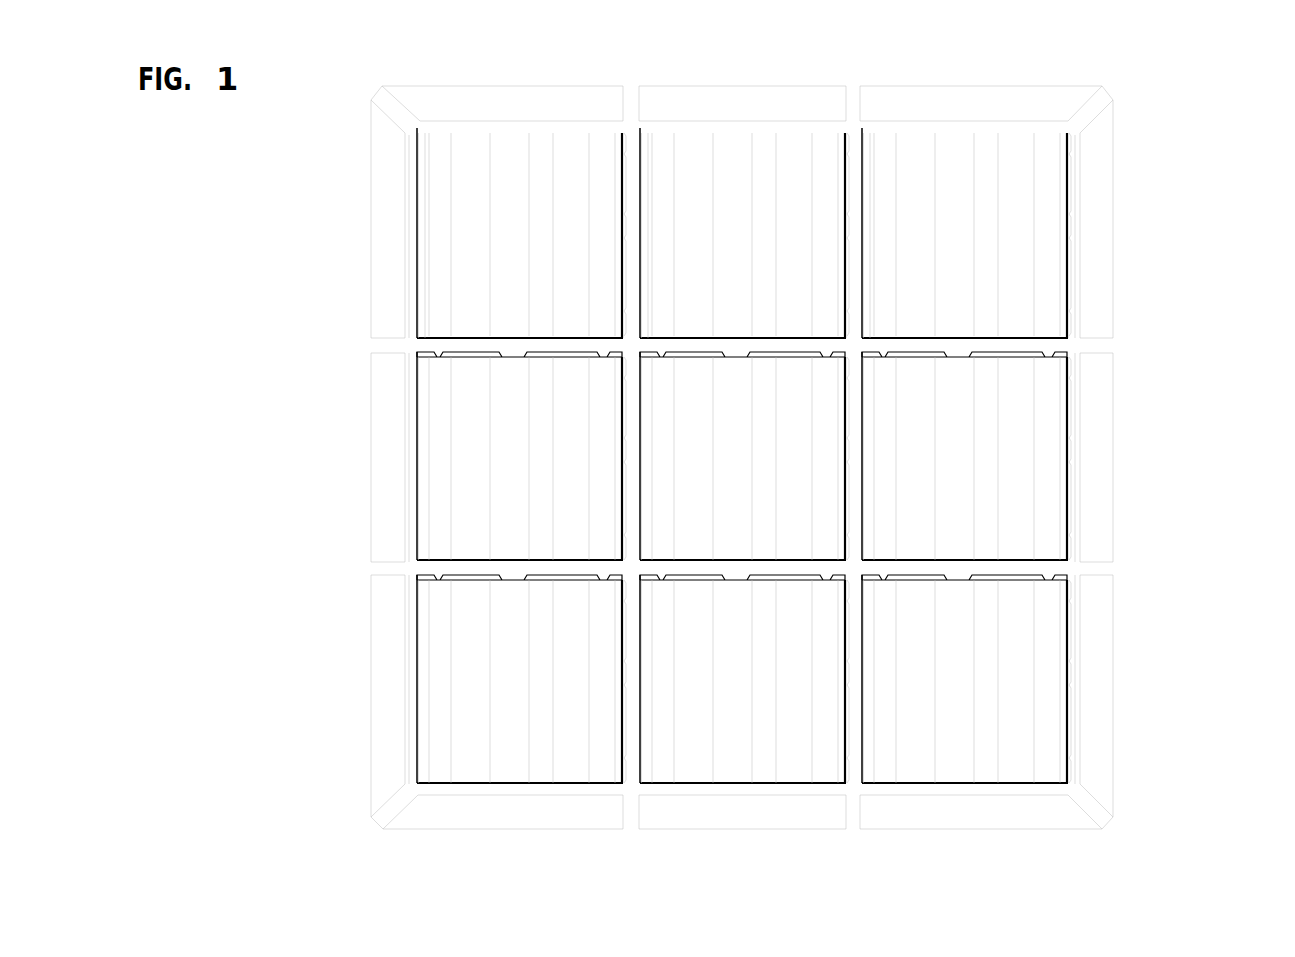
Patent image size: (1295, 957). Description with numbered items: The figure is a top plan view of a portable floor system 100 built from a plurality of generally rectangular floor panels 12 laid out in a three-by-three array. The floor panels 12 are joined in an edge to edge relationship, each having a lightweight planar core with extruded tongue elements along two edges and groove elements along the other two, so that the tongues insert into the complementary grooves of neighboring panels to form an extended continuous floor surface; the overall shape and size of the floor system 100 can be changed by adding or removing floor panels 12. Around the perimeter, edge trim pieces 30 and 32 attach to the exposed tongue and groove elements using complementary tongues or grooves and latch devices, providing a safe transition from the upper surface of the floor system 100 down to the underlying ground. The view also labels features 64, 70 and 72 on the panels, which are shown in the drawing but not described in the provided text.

The portable floor system 100 is at (1216, 127).
The floor panel 12 is at (438, 382).
The edge trim piece 30 is at (705, 95).
The edge trim piece 32 is at (517, 95).
The panel edge connector 64 is at (476, 338).
The panel face 70 is at (568, 162).
The slat 72 is at (530, 173).